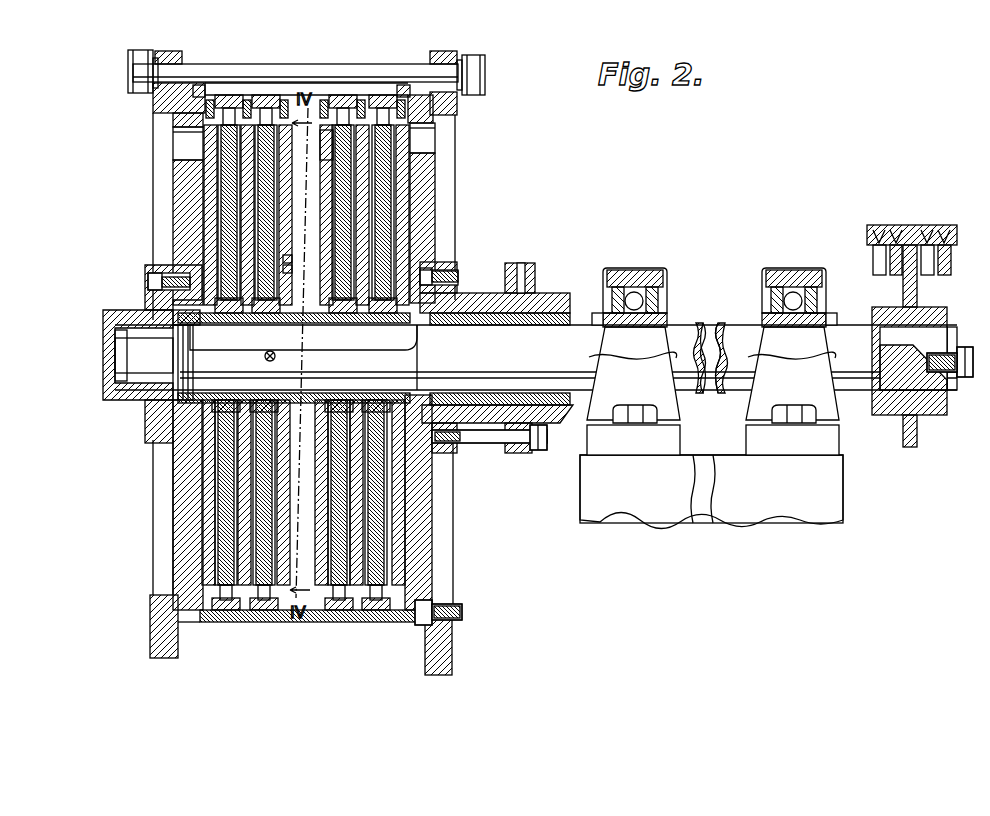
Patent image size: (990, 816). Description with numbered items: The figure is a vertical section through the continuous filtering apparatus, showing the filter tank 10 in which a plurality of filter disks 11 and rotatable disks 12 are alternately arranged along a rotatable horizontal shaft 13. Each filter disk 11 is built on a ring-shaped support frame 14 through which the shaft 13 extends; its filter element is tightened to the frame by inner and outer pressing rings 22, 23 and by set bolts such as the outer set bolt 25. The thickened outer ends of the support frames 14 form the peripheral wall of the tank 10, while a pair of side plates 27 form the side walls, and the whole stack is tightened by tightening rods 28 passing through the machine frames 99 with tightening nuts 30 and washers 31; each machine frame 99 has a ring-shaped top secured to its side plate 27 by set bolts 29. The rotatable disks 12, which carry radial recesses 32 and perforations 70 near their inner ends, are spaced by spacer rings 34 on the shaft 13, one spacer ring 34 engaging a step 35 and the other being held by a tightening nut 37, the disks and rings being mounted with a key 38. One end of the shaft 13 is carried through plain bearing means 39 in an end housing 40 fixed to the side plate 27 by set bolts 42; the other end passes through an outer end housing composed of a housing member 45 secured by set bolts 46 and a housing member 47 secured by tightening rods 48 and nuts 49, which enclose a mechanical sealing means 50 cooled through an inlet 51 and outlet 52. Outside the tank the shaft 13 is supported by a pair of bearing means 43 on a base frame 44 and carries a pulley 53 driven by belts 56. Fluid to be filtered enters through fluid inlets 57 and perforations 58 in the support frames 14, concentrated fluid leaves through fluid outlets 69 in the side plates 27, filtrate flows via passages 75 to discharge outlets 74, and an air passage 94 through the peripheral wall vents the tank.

The filter tank 10 is at (439, 193).
The filter disk 11 is at (428, 165).
The rotatable disk 12 is at (208, 190).
The rotatable horizontal shaft 13 is at (565, 300).
The support frame 14 is at (225, 172).
The inner pressing ring 22 is at (292, 270).
The outer pressing ring 23 is at (252, 100).
The outer set bolt 25 is at (402, 90).
The side plate 27 is at (188, 228).
The tightening rod 28 is at (312, 70).
The set bolt 29 is at (460, 615).
The tightening nut 30 is at (143, 80).
The washer 31 is at (135, 60).
The recess 32 is at (292, 258).
The spacer ring 34 is at (238, 318).
The step 35 is at (422, 355).
The tightening nut 37 is at (180, 316).
The key 38 is at (305, 355).
The plain bearing means 39 is at (130, 400).
The end housing 40 is at (150, 400).
The set bolt 42 is at (155, 275).
The bearing means 43 is at (650, 272).
The base frame 44 is at (715, 522).
The housing member 45 is at (475, 300).
The set bolt 46 is at (440, 268).
The housing member 47 is at (555, 420).
The tightening rod 48 is at (490, 440).
The nut 49 is at (540, 445).
The mechanical sealing means 50 is at (468, 445).
The inlet 51 is at (518, 445).
The outlet 52 is at (522, 262).
The pulley 53 is at (870, 226).
The belt 56 is at (905, 228).
The fluid inlet 57 is at (268, 612).
The perforation 58 is at (228, 612).
The fluid outlet 69 is at (185, 140).
The perforation 70 is at (205, 322).
The discharge outlet 74 is at (228, 95).
The passage 75 is at (332, 142).
The air passage 94 is at (199, 88).
The machine frame 99 is at (447, 58).